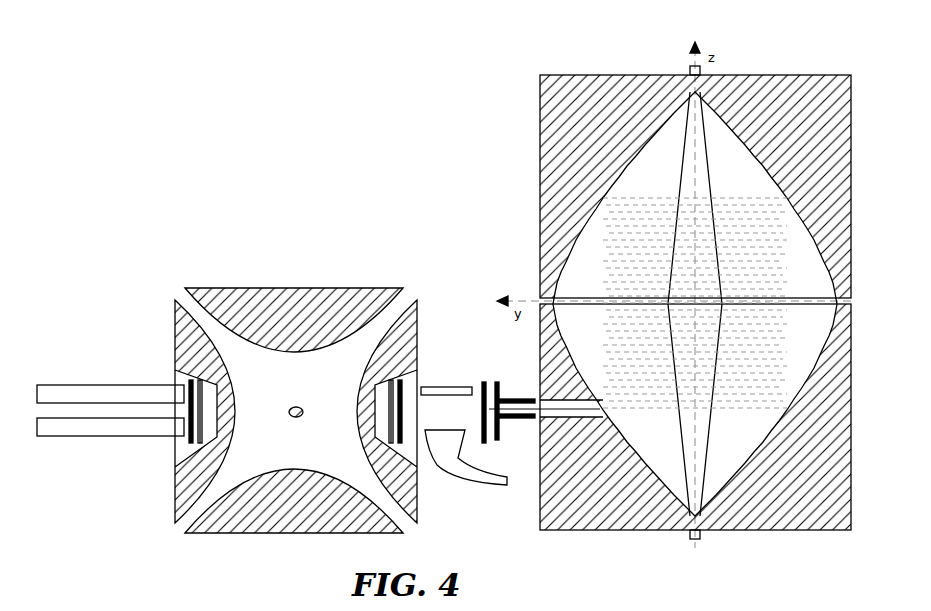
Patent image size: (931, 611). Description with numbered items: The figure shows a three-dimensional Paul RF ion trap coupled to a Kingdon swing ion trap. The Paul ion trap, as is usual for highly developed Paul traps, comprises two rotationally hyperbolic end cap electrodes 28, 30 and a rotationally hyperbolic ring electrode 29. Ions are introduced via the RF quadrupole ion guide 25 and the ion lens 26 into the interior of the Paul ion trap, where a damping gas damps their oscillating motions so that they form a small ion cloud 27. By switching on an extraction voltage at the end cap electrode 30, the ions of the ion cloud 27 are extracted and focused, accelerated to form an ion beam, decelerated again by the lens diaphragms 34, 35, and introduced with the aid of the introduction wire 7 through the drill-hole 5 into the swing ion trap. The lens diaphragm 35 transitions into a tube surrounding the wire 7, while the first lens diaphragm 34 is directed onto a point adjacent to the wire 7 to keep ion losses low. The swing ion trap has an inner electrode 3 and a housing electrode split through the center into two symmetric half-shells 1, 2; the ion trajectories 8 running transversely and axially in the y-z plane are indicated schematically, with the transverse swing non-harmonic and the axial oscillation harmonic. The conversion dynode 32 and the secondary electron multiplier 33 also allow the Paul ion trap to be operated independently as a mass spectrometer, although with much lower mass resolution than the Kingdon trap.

The half-shell 1 is at (684, 315).
The half-shell 2 is at (684, 291).
The inner electrode 3 is at (695, 304).
The drill-hole 5 is at (571, 420).
The introduction wire 7 is at (513, 409).
The ion trajectories 8 is at (695, 303).
The RF quadrupole ion guide 25 is at (110, 402).
The ion lens 26 is at (175, 375).
The ion cloud 27 is at (294, 422).
The end cap electrode 28 is at (191, 411).
The ring electrode 29 is at (294, 402).
The end cap electrode 30 is at (399, 411).
The conversion dynode 32 is at (446, 383).
The secondary electron multiplier 33 is at (466, 464).
The lens diaphragm 34 is at (486, 423).
The lens diaphragm 35 is at (515, 403).